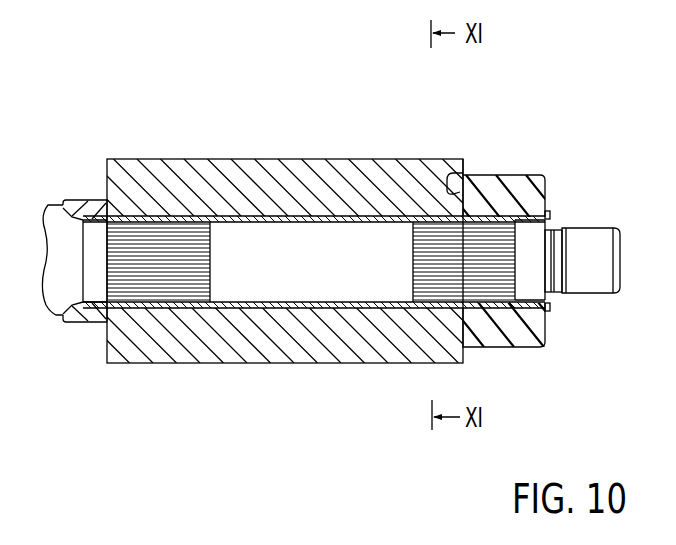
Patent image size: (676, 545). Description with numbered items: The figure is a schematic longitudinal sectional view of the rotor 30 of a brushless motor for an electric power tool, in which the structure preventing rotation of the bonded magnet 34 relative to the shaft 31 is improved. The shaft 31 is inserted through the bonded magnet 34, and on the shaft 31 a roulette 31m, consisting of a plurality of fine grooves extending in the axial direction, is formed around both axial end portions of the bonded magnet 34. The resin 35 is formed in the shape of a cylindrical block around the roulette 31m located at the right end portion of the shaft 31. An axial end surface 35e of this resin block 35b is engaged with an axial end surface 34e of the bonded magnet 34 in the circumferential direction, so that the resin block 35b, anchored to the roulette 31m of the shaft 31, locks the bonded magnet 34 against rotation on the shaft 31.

The rotor 30 is at (180, 132).
The shaft 31 is at (282, 278).
The roulette 31m is at (163, 270).
The bonded magnet 34 is at (240, 157).
The axial end surface of the bonded magnet 34e is at (466, 202).
The resin 35 is at (314, 214).
The axial end surface of the resin block 35e is at (452, 178).
The resin block 35b is at (500, 200).